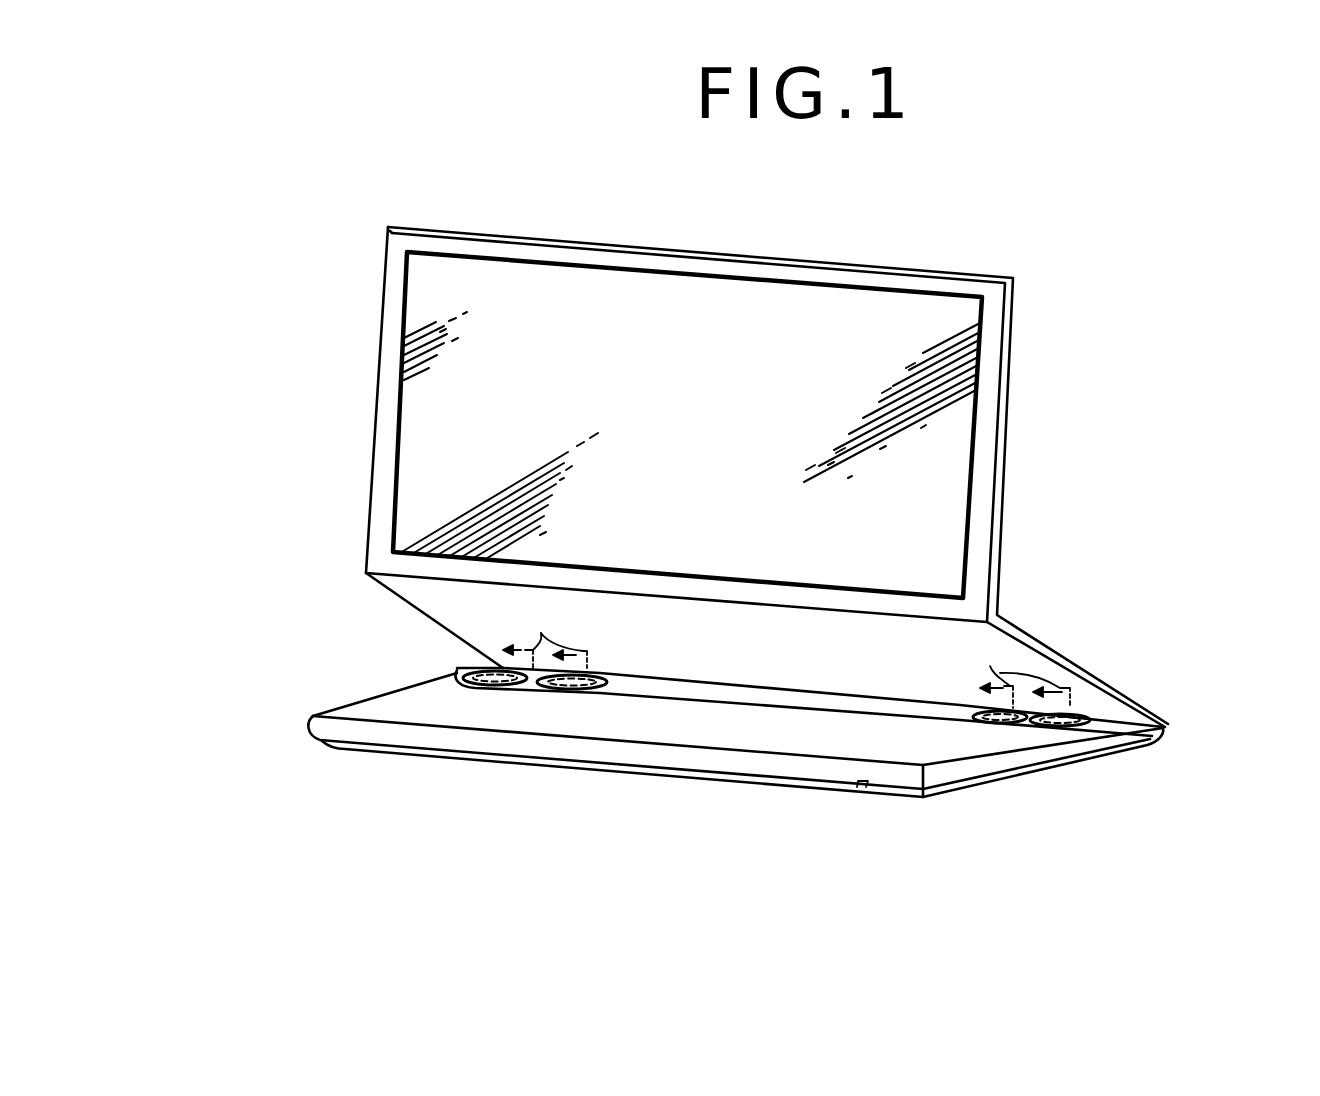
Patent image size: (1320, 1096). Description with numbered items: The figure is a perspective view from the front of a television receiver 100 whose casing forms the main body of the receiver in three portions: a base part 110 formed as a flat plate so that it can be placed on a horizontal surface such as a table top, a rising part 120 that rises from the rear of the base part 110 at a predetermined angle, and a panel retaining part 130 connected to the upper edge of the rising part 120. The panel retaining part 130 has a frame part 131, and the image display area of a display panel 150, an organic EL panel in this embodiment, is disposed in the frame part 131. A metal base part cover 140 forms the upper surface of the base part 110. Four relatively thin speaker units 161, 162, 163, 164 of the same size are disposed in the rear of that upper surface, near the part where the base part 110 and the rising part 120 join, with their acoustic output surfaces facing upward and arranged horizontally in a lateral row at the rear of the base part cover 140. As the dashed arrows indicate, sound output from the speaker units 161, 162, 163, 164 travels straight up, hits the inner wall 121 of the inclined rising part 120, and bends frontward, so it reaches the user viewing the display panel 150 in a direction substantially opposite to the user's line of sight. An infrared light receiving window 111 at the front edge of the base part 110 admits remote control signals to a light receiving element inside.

The television receiver 100 is at (1043, 649).
The base part 110 is at (1113, 753).
The infrared light receiving window 111 is at (861, 786).
The rising part 120 is at (1100, 693).
The inner wall 121 is at (648, 615).
The panel retaining part 130 is at (1008, 432).
The frame part 131 is at (978, 357).
The base part cover 140 is at (597, 753).
The display panel 150 is at (622, 316).
The speaker unit 161 is at (463, 678).
The speaker unit 162 is at (562, 686).
The speaker unit 163 is at (1002, 724).
The speaker unit 164 is at (1060, 727).